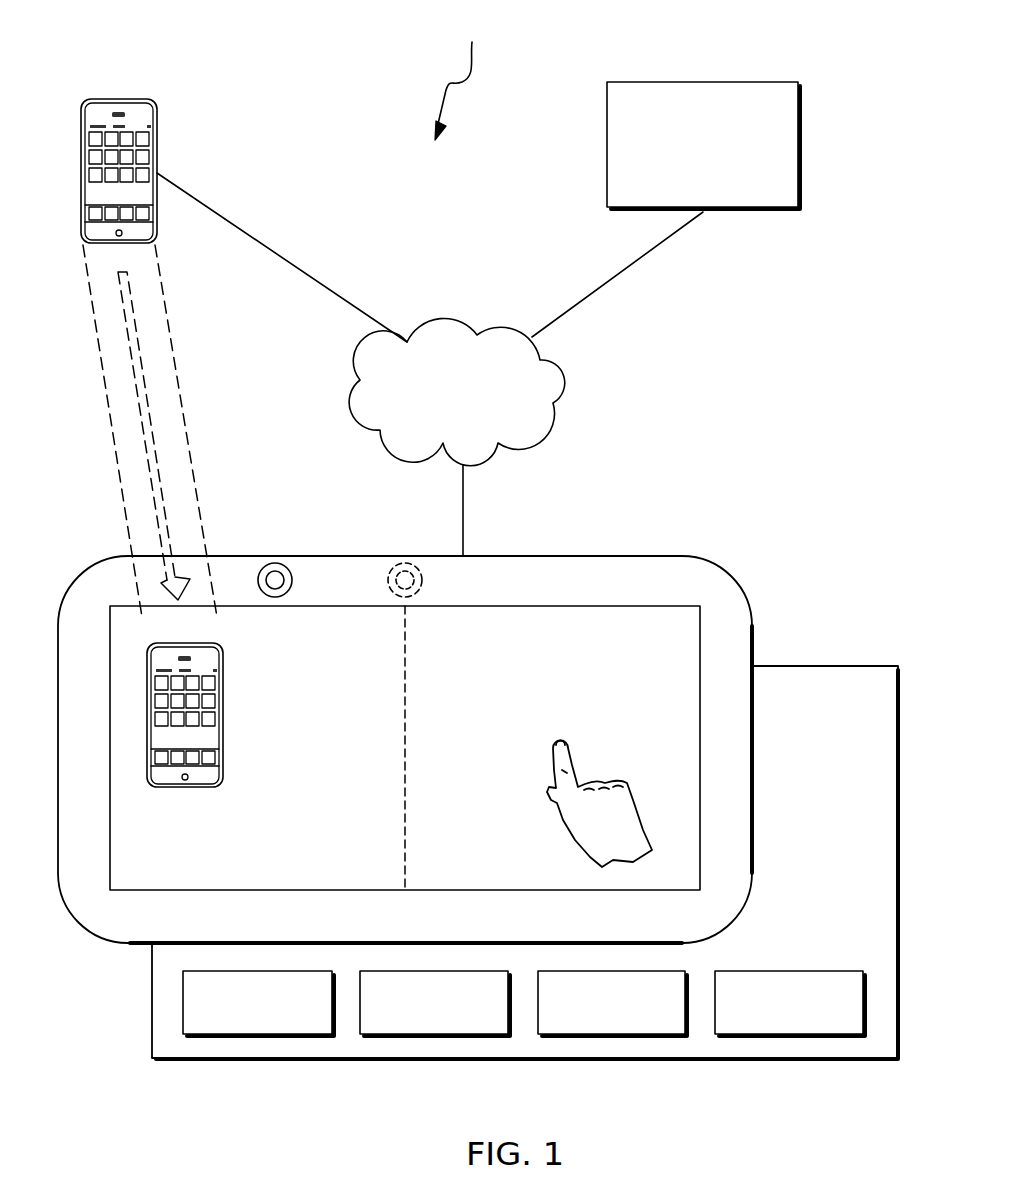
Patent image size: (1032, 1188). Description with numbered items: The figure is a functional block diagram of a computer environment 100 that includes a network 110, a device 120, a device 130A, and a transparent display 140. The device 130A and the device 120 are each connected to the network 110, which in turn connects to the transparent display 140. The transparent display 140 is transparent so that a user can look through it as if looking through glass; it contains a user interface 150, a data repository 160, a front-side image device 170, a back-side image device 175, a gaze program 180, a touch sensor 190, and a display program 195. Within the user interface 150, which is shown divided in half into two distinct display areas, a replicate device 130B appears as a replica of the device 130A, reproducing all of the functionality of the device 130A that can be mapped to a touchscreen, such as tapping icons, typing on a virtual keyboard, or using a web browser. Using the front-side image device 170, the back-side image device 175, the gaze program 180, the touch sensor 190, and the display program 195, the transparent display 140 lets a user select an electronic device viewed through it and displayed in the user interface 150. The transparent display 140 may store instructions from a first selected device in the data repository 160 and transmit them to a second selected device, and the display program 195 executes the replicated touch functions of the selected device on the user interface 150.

The computer environment 100 is at (463, 76).
The network 110 is at (445, 322).
The device 120 is at (701, 82).
The device 130A is at (115, 99).
The replicate device 130B is at (223, 713).
The transparent display 140 is at (655, 556).
The user interface 150 is at (557, 606).
The data repository 160 is at (260, 1035).
The front-side image device 170 is at (275, 563).
The back-side image device 175 is at (405, 563).
The gaze program 180 is at (436, 1035).
The touch sensor 190 is at (614, 1035).
The display program 195 is at (792, 1035).